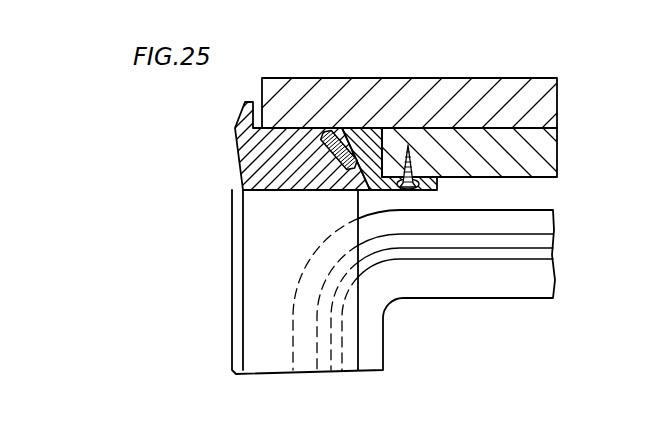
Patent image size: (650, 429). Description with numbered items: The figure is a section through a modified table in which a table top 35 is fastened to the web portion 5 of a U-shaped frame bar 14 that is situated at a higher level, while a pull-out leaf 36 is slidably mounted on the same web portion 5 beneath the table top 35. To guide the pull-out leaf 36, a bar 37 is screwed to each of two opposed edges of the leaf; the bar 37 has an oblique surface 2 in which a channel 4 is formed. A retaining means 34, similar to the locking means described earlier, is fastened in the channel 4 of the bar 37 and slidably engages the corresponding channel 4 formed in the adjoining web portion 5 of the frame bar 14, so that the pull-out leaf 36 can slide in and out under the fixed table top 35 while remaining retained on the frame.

The oblique surface 2 is at (345, 134).
The channel 4 is at (343, 140).
The web portion 5 is at (236, 147).
The frame bar 14 is at (230, 292).
The retaining means 34 is at (325, 188).
The table top 35 is at (500, 92).
The pull-out leaf 36 is at (552, 150).
The bar 37 is at (382, 140).